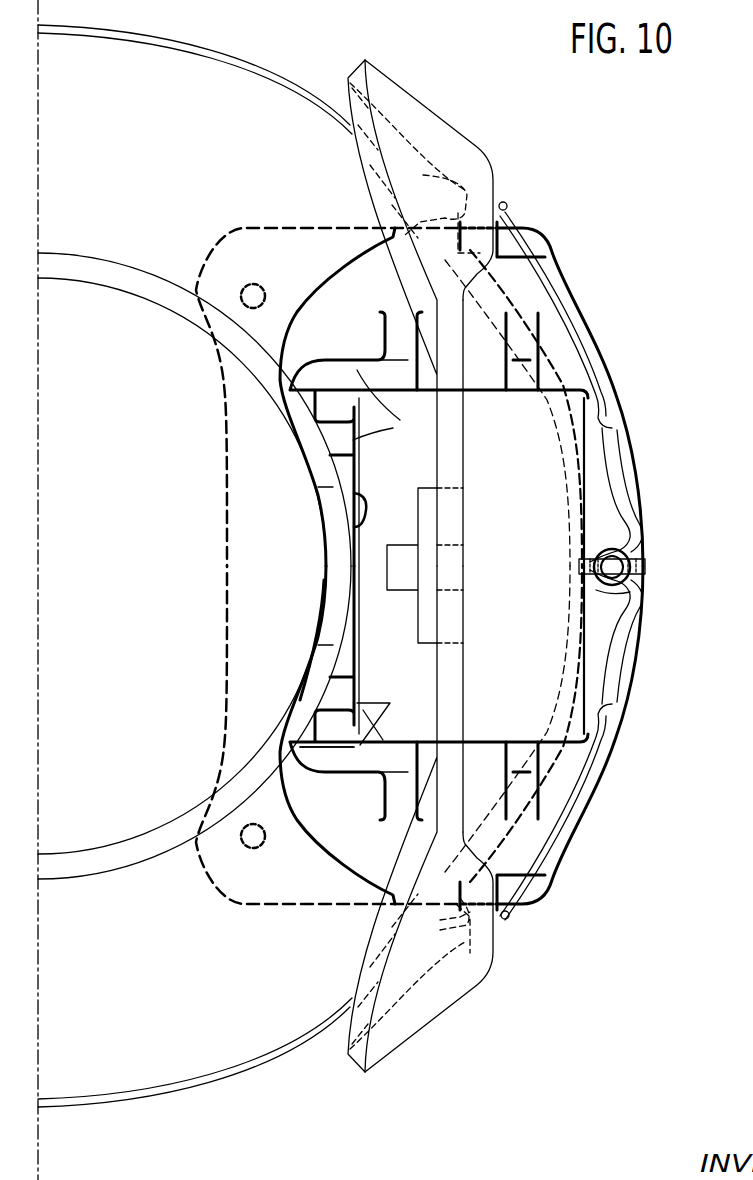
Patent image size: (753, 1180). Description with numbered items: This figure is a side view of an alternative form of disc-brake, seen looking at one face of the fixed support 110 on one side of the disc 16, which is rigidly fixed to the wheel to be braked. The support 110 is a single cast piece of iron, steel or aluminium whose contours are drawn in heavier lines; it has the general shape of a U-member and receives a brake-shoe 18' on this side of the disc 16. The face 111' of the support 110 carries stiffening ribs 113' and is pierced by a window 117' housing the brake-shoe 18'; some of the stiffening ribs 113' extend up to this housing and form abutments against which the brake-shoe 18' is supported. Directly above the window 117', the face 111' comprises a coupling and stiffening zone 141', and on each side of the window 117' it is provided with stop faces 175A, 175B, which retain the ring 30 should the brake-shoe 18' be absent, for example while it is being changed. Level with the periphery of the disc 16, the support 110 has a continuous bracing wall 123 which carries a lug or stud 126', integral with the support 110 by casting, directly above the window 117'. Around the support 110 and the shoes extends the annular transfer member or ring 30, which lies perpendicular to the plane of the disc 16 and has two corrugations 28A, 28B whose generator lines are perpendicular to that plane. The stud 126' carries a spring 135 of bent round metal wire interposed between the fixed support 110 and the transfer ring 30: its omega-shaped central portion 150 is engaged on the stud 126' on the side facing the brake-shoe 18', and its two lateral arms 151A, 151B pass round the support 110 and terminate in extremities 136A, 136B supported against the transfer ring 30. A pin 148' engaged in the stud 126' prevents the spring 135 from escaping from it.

The disc 16 is at (281, 74).
The annular transfer member or ring 30 is at (427, 107).
The corrugation 28A is at (473, 173).
The corrugation 28B is at (483, 935).
The stop face 175A is at (423, 175).
The stop face 175B is at (440, 930).
The extremity 136A is at (507, 203).
The extremity 136B is at (510, 920).
The fixed support 110 is at (317, 273).
The stiffening ribs 113' is at (446, 566).
The brake-shoe 18' is at (444, 566).
The face 111' is at (399, 773).
The window 117' is at (315, 538).
The coupling and stiffening zone 141' is at (286, 640).
The lateral arm 151A is at (570, 323).
The lateral arm 151B is at (610, 737).
The continuous bracing wall 123 is at (633, 457).
The spring 135 is at (640, 686).
The lug or stud 126' is at (658, 604).
The omega-shaped central portion 150 is at (593, 543).
The pin 148' is at (649, 539).